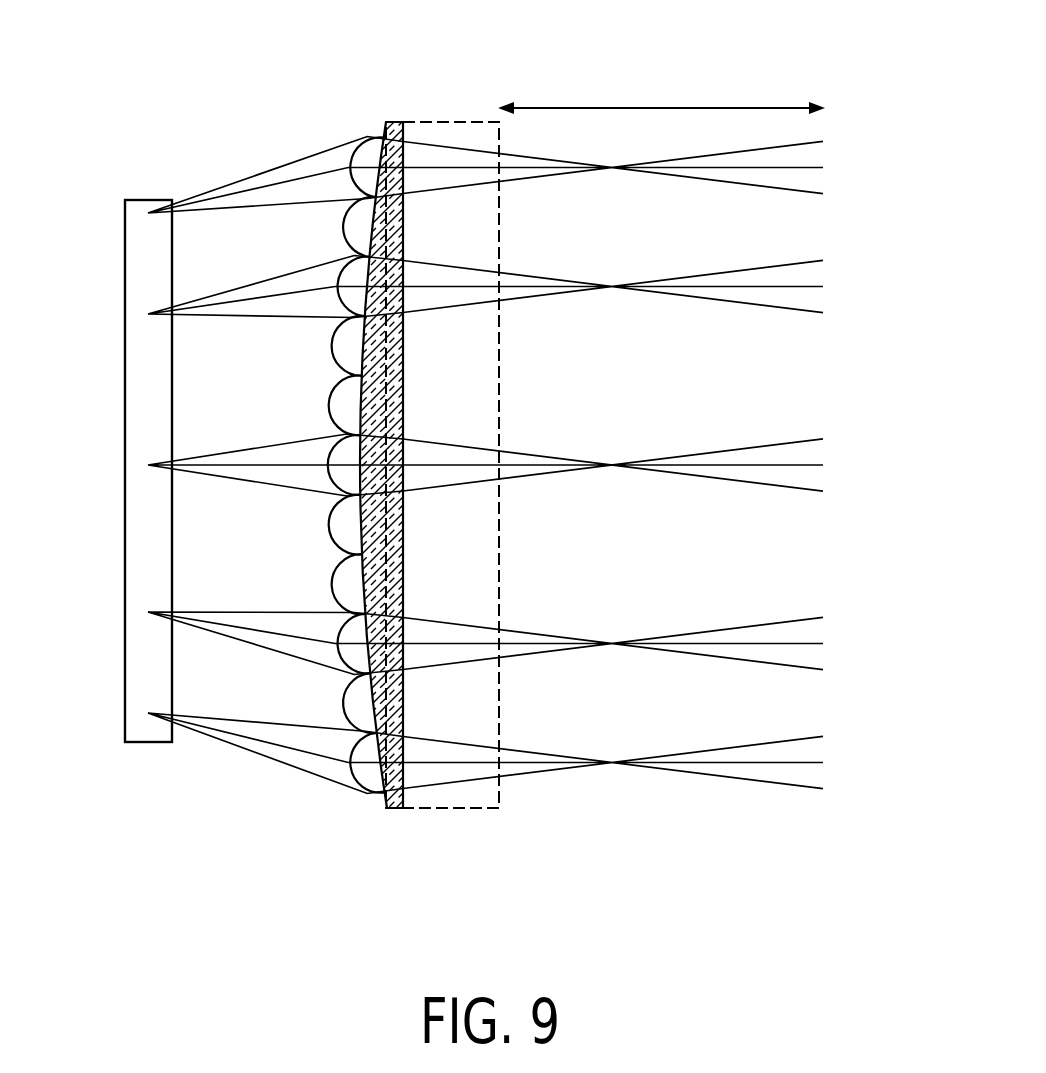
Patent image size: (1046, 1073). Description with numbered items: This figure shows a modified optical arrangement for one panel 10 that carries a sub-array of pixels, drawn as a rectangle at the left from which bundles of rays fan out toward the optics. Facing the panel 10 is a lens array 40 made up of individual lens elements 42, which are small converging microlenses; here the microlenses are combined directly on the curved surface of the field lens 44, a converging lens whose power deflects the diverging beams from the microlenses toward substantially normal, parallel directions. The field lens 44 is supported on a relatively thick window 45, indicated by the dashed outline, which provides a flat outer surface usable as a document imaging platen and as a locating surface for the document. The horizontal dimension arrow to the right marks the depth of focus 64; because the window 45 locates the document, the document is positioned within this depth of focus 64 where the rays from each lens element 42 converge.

The panel 10 is at (125, 408).
The lens array 40 is at (350, 444).
The lens element 42 is at (357, 706).
The field lens 44 is at (399, 122).
The window 45 is at (500, 792).
The depth of focus 64 is at (662, 108).